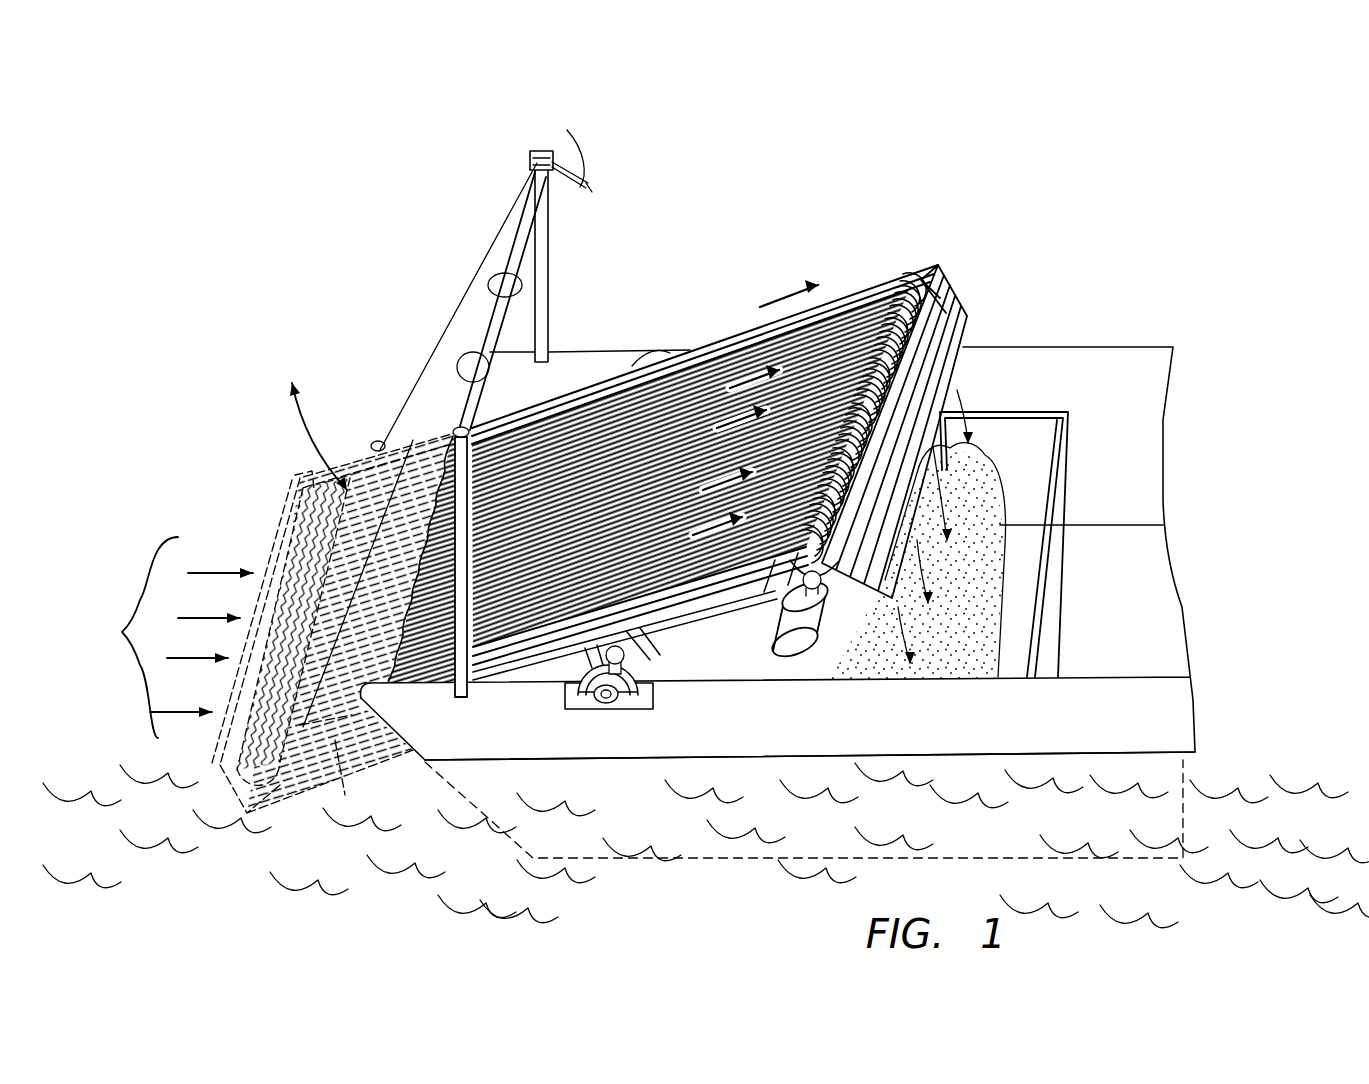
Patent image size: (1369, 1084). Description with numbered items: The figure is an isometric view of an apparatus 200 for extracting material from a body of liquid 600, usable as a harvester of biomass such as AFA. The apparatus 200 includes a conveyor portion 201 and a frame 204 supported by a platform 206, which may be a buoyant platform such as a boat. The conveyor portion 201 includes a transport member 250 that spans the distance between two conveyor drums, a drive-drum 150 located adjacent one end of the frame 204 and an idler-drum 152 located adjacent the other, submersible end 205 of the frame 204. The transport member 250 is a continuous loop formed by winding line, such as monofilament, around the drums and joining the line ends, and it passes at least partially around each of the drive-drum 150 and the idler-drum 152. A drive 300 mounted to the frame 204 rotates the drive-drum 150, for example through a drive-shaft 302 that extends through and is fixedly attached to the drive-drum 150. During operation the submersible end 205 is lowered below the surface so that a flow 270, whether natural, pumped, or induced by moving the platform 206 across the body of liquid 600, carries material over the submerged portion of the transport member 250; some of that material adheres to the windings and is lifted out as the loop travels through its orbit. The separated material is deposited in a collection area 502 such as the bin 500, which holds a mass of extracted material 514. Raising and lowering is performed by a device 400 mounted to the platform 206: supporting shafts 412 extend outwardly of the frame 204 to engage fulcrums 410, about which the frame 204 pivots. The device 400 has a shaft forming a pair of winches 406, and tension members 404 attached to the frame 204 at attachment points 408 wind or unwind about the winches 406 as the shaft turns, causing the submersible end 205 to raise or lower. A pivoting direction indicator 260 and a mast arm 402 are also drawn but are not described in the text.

The drive-drum 150 is at (880, 320).
The idler-drum 152 is at (300, 483).
The apparatus for extracting material from a body of liquid 200 is at (1185, 227).
The conveyor portion 201 is at (876, 237).
The frame 204 is at (903, 277).
The submersible end 205 is at (246, 515).
The platform 206 is at (1165, 822).
The transport member 250 is at (667, 400).
The pivot direction 260 is at (306, 350).
The flow 270 is at (163, 637).
The drive 300 is at (793, 650).
The drive-shaft 302 is at (822, 568).
The device for raising and lowering 400 is at (521, 140).
The mast arm 402 is at (583, 195).
The tension members 404 is at (455, 337).
The winches 406 is at (515, 178).
The attachment points 408 is at (378, 442).
The fulcrums 410 is at (650, 357).
The supporting shafts 412 is at (620, 660).
The bin 500 is at (1047, 547).
The collection area 502 is at (1027, 543).
The extracted material 514 is at (960, 574).
The body of liquid 600 is at (1162, 757).